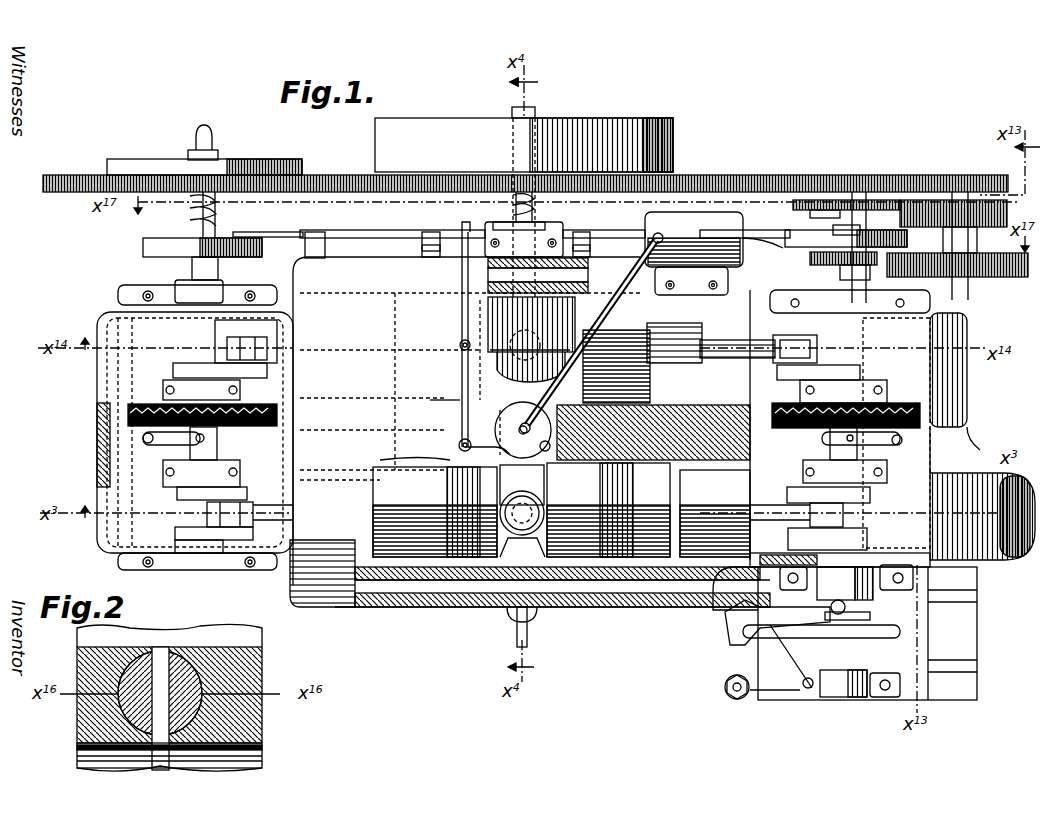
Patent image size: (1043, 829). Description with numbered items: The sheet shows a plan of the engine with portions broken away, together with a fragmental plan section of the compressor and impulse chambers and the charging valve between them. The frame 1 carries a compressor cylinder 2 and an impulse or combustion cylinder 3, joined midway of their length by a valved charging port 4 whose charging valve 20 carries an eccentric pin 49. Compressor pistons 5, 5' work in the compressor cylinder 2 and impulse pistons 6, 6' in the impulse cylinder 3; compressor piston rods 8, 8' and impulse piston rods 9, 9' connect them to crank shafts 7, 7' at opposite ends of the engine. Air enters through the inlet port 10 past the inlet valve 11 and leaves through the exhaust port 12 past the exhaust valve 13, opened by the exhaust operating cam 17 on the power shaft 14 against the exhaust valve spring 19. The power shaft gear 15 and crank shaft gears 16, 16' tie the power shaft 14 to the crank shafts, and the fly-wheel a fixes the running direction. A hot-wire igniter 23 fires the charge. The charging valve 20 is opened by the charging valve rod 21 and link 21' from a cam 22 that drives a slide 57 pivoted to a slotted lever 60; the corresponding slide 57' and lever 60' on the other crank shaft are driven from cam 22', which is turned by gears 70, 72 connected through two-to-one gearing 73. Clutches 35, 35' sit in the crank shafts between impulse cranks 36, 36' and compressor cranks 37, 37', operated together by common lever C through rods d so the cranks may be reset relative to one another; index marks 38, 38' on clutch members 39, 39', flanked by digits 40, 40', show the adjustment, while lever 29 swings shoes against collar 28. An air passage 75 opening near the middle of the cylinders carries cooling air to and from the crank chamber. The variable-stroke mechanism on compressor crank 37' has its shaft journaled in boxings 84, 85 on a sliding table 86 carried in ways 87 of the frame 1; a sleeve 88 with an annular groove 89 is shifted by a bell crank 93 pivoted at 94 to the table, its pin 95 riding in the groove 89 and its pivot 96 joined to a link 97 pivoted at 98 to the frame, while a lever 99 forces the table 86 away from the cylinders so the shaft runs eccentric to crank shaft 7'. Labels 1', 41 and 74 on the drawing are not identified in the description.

In FIG. 1, the frame 1 is at (465, 432).
In FIG. 1, the housing portion 1' is at (274, 589).
In FIG. 1, the compressor cylinder 2 is at (445, 575).
In FIG. 2, the compressor cylinder 2 is at (255, 758).
In FIG. 1, the impulse cylinder 3 is at (487, 282).
In FIG. 2, the impulse cylinder 3 is at (262, 637).
In FIG. 1, the charging port 4 is at (591, 333).
In FIG. 2, the charging port 4 is at (160, 650).
In FIG. 1, the compressor piston 5 is at (435, 512).
In FIG. 1, the compressor piston 5' is at (648, 481).
In FIG. 1, the impulse piston 6 is at (498, 347).
In FIG. 1, the impulse piston 6' is at (642, 363).
In FIG. 1, the crank shaft 7 is at (188, 215).
In FIG. 1, the crank shaft 7' is at (815, 246).
In FIG. 1, the compressor piston rod 8 is at (234, 507).
In FIG. 1, the compressor piston rod 8' is at (783, 529).
In FIG. 1, the impulse piston rod 9 is at (208, 432).
In FIG. 1, the impulse piston rod 9' is at (758, 362).
In FIG. 1, the inlet port 10 is at (505, 585).
In FIG. 1, the inlet valve 11 is at (540, 585).
In FIG. 1, the exhaust port 12 is at (462, 382).
In FIG. 1, the exhaust valve 13 is at (462, 360).
In FIG. 1, the power shaft 14 is at (535, 113).
In FIG. 1, the power shaft gear 15 is at (666, 174).
In FIG. 1, the crank shaft gear 16 is at (525, 172).
In FIG. 1, the crank shaft gear 16' is at (766, 169).
In FIG. 1, the exhaust operating cam 17 is at (490, 230).
In FIG. 1, the exhaust valve spring 19 is at (961, 535).
In FIG. 1, the charging valve 20 is at (495, 428).
In FIG. 2, the charging valve 20 is at (185, 670).
In FIG. 1, the charging valve rod 21 is at (415, 460).
In FIG. 1, the link 21' is at (423, 414).
In FIG. 1, the cam 22 is at (183, 404).
In FIG. 1, the cam 22' is at (860, 206).
In FIG. 1, the electrical igniter 23 is at (488, 303).
In FIG. 1, the collar 28 is at (132, 163).
In FIG. 1, the lever 29 is at (215, 154).
In FIG. 1, the clutch 35 is at (160, 445).
In FIG. 1, the clutch 35' is at (892, 425).
In FIG. 1, the impulse crank 36 is at (246, 381).
In FIG. 1, the impulse crank 36' is at (800, 386).
In FIG. 1, the compressor crank 37 is at (192, 483).
In FIG. 1, the compressor crank 37' is at (843, 484).
In FIG. 1, the index mark 38 is at (846, 434).
In FIG. 1, the index mark 38' is at (879, 375).
In FIG. 1, the clutch member 39 is at (820, 471).
In FIG. 1, the clutch member 39' is at (781, 398).
In FIG. 1, the set of digits 40 is at (862, 401).
In FIG. 1, the set of digits 40' is at (899, 404).
In FIG. 1, the motor 41 is at (694, 253).
In FIG. 1, the pin 49 is at (552, 436).
In FIG. 1, the slide 57 is at (294, 233).
In FIG. 1, the slide 57' is at (745, 250).
In FIG. 1, the slotted lever 60 is at (392, 232).
In FIG. 1, the slotted lever 60' is at (604, 232).
In FIG. 1, the gear 70 is at (880, 277).
In FIG. 1, the gear 72 is at (848, 205).
In FIG. 1, the two-to-one gearing 73 is at (970, 240).
In FIG. 1, the part 74 is at (848, 268).
In FIG. 1, the air passage 75 is at (647, 595).
In FIG. 1, the boxing 84 is at (905, 590).
In FIG. 1, the boxing 85 is at (845, 700).
In FIG. 1, the sliding table 86 is at (945, 645).
In FIG. 1, the ways 87 is at (960, 602).
In FIG. 1, the sleeve 88 is at (870, 617).
In FIG. 1, the annular groove 89 is at (846, 607).
In FIG. 1, the bell crank 93 is at (790, 655).
In FIG. 1, the pivot 94 is at (845, 583).
In FIG. 1, the pin 95 is at (880, 560).
In FIG. 1, the pivot 96 is at (810, 690).
In FIG. 1, the link 97 is at (780, 700).
In FIG. 1, the pivot 98 is at (725, 695).
In FIG. 1, the lever 99 is at (870, 638).
In FIG. 1, the fly-wheel a is at (470, 112).
In FIG. 1, the rod d is at (492, 441).
In FIG. 1, the common lever C is at (530, 645).